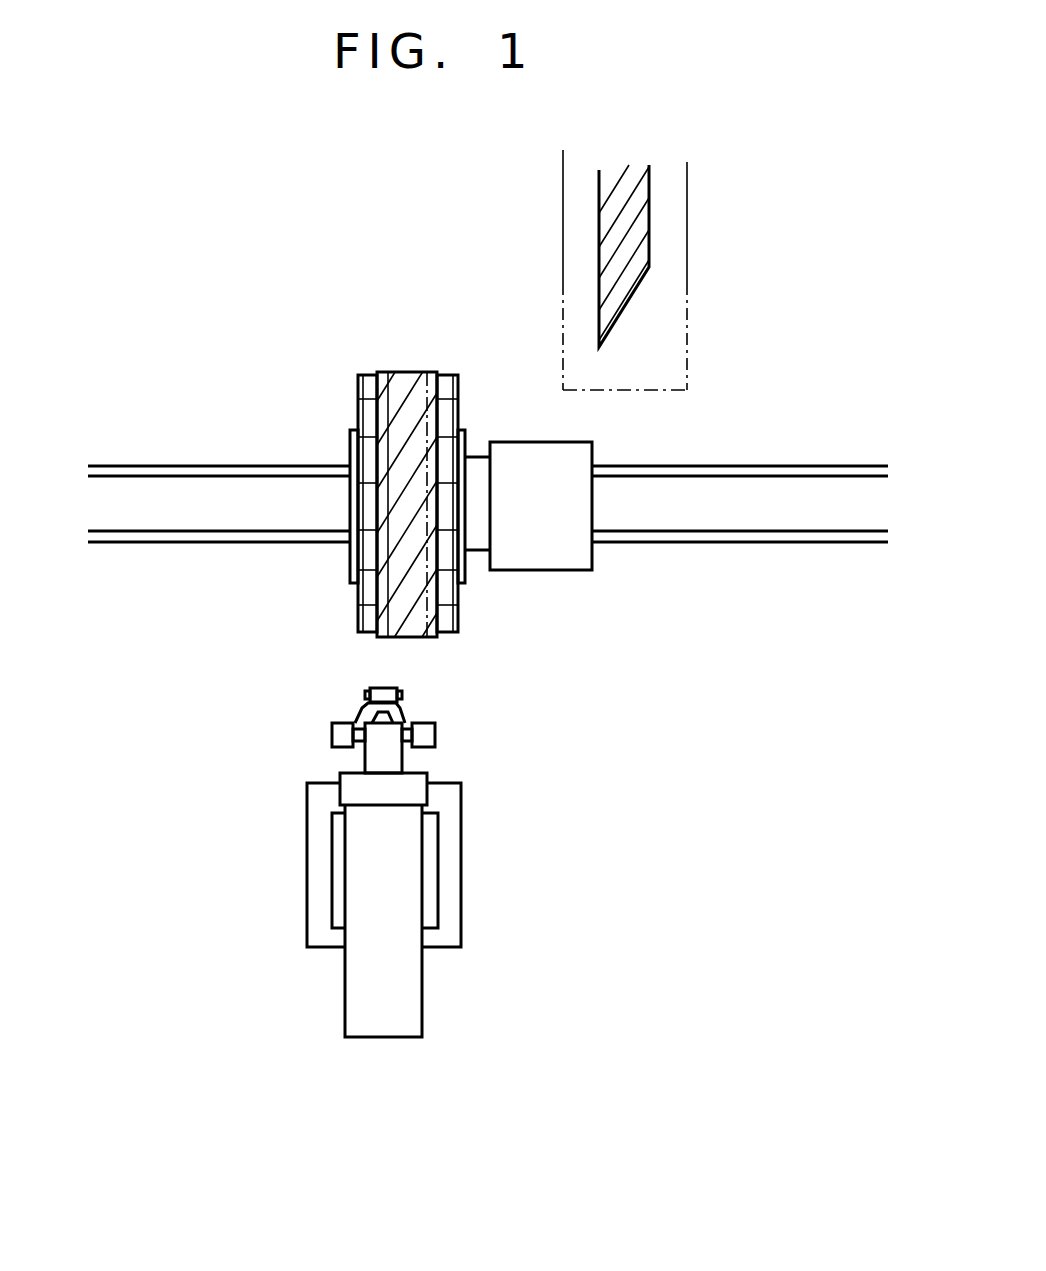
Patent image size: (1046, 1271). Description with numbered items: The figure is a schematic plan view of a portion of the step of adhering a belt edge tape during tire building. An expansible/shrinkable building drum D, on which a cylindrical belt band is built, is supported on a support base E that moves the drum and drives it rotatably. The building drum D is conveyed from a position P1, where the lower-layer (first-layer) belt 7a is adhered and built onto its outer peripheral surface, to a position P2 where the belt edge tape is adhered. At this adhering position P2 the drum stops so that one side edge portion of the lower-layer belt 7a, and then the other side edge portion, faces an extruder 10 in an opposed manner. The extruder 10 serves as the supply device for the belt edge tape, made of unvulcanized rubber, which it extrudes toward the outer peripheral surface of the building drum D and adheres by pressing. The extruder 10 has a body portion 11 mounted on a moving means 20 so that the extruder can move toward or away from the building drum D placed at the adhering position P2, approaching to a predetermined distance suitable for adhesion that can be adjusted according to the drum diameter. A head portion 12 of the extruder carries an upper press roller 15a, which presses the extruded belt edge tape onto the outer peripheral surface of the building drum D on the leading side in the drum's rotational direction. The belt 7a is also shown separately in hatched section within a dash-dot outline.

The position P1 is at (653, 510).
The position P2 is at (508, 393).
The building drum D is at (368, 366).
The belt 7a is at (413, 380).
The support base E is at (555, 555).
The extruder 10 is at (346, 866).
The body portion 11 is at (393, 893).
The head portion 12 is at (375, 757).
The press roller 15a is at (378, 688).
The moving means 20 is at (320, 903).